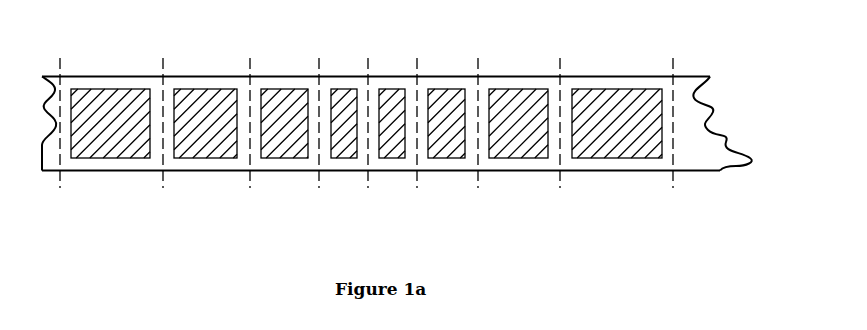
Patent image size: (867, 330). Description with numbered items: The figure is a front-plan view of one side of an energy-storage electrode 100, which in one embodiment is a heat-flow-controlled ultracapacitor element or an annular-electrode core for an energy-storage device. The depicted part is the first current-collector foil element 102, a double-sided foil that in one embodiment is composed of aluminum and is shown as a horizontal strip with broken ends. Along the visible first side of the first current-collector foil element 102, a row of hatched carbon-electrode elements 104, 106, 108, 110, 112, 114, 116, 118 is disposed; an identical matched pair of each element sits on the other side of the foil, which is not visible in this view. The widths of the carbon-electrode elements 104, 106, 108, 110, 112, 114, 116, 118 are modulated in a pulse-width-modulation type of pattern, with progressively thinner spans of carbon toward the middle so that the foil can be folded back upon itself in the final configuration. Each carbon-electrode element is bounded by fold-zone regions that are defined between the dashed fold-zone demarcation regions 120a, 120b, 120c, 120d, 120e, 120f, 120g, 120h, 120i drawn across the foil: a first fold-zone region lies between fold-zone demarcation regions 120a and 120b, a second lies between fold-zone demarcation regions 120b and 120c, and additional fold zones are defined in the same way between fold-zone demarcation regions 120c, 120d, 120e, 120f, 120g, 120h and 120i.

The energy-storage electrode 100 is at (208, 272).
The first current-collector foil element 102 is at (698, 76).
The carbon-electrode element 104 is at (116, 101).
The carbon-electrode element 106 is at (212, 101).
The carbon-electrode element 108 is at (292, 101).
The carbon-electrode element 110 is at (350, 101).
The carbon-electrode element 112 is at (397, 101).
The carbon-electrode element 114 is at (453, 101).
The carbon-electrode element 116 is at (527, 101).
The carbon-electrode element 118 is at (622, 101).
The fold-zone demarcation region 120a is at (60, 174).
The fold-zone demarcation region 120b is at (163, 174).
The fold-zone demarcation region 120c is at (250, 174).
The fold-zone demarcation region 120d is at (319, 174).
The fold-zone demarcation region 120e is at (368, 174).
The fold-zone demarcation region 120f is at (417, 174).
The fold-zone demarcation region 120g is at (478, 174).
The fold-zone demarcation region 120h is at (560, 174).
The fold-zone demarcation region 120i is at (673, 174).